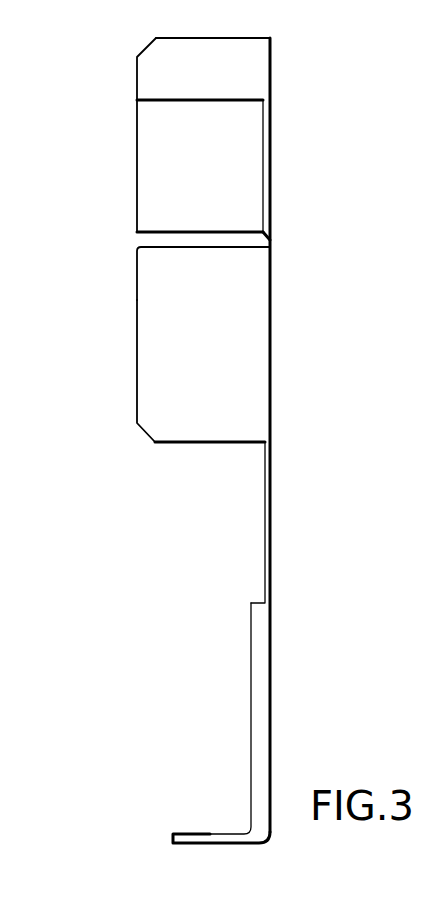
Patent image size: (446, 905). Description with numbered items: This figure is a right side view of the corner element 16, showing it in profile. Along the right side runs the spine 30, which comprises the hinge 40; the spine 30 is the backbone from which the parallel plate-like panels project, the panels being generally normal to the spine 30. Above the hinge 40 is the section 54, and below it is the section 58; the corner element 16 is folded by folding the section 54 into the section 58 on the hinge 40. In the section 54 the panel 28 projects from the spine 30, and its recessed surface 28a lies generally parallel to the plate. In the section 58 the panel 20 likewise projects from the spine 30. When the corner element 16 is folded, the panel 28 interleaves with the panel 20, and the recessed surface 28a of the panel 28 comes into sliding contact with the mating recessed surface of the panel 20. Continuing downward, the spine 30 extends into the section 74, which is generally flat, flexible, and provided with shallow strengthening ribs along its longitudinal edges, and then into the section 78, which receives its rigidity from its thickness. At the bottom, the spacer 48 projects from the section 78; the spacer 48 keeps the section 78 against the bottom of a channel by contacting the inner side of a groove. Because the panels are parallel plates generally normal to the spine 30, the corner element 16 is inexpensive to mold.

The corner element 16 is at (269, 38).
The spine 30 is at (272, 63).
The panel 28 is at (263, 87).
The section 54 is at (248, 163).
The recessed surface 28a is at (248, 192).
The hinge 40 is at (270, 240).
The section 58 is at (258, 342).
The panel 20 is at (263, 373).
The section 74 is at (268, 488).
The section 78 is at (267, 692).
The spacer 48 is at (203, 838).